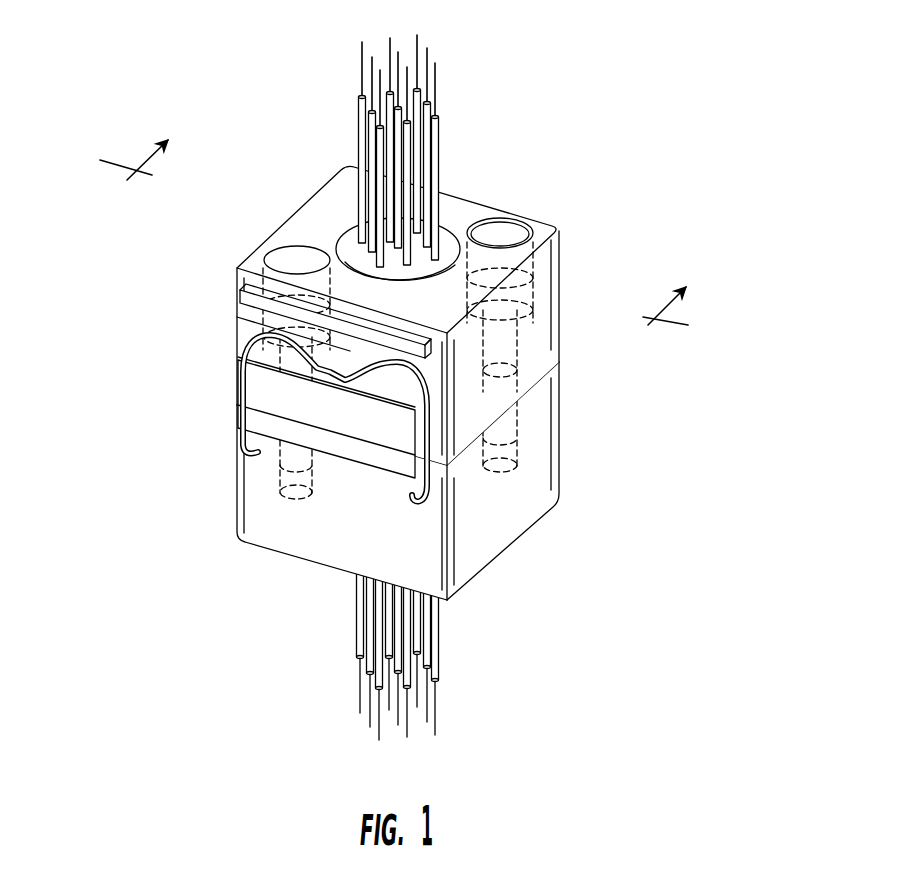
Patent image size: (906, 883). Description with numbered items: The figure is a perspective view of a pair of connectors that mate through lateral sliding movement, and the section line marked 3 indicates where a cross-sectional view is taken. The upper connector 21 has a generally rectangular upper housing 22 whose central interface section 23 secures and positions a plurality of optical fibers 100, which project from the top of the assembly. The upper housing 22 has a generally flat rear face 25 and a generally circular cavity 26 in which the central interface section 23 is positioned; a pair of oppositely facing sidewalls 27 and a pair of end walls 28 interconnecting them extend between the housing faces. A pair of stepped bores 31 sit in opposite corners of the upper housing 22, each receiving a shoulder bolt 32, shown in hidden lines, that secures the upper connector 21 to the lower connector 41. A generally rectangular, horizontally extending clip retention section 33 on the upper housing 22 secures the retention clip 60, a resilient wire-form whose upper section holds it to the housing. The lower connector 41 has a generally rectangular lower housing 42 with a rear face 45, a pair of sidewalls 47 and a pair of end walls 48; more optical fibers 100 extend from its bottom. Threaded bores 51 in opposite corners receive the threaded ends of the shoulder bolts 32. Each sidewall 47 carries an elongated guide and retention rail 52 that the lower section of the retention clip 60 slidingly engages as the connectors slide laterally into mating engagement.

The upper connector 21 is at (226, 127).
The upper housing 22 is at (483, 213).
The central interface section 23 is at (447, 240).
The rear face 25 is at (337, 208).
The cavity 26 is at (428, 268).
The sidewalls 27 is at (243, 318).
The end walls 28 is at (540, 297).
The stepped bores 31 is at (280, 259).
The shoulder bolt 32 is at (507, 353).
The clip retention section 33 is at (255, 382).
The lower connector 41 is at (576, 556).
The lower housing 42 is at (547, 463).
The rear face 45 is at (258, 550).
The sidewalls 47 is at (250, 495).
The end walls 48 is at (466, 558).
The threaded bores 51 is at (507, 452).
The guide and retention rail 52 is at (357, 463).
The retention clip 60 is at (245, 343).
The optical fibers 100 is at (442, 147).
The section line 3- 3 is at (394, 247).